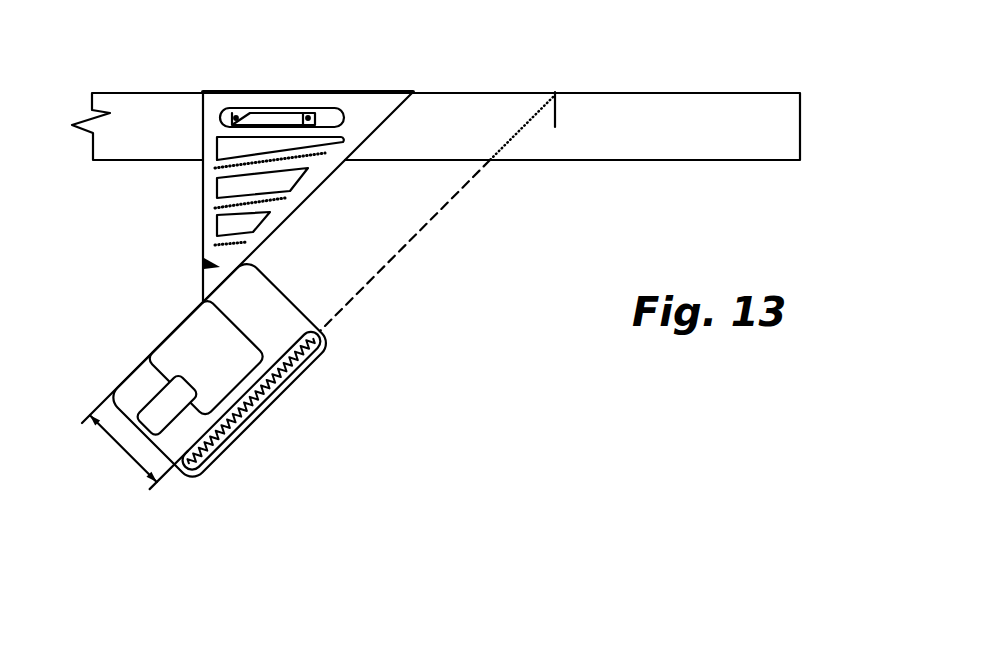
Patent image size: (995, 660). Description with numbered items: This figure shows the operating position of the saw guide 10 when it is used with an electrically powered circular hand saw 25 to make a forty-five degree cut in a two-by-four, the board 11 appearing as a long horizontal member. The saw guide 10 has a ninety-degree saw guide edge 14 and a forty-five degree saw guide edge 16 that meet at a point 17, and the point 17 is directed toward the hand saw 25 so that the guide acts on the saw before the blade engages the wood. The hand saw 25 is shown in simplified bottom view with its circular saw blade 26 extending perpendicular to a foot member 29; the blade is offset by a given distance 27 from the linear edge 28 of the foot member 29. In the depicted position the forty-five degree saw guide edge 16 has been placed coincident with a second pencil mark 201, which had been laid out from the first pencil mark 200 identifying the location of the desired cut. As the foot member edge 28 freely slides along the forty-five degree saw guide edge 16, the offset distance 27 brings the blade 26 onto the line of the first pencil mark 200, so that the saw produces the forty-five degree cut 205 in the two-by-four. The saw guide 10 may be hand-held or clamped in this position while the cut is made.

The saw guide 10 is at (192, 125).
The fence rail 11 is at (250, 90).
The 90-degree saw guide edge 14 is at (203, 178).
The 45-degree saw guide edge 16 is at (295, 212).
The point of the saw guide 17 is at (203, 283).
The hand saw 25 is at (240, 449).
The circular saw blade 26 is at (288, 393).
The offset distance 27 is at (126, 455).
The linear edge of foot member 28 is at (193, 312).
The foot member 29 is at (328, 352).
The first pencil mark 200 is at (558, 120).
The second pencil mark 201 is at (392, 111).
The 45-degree cut 205 is at (515, 133).